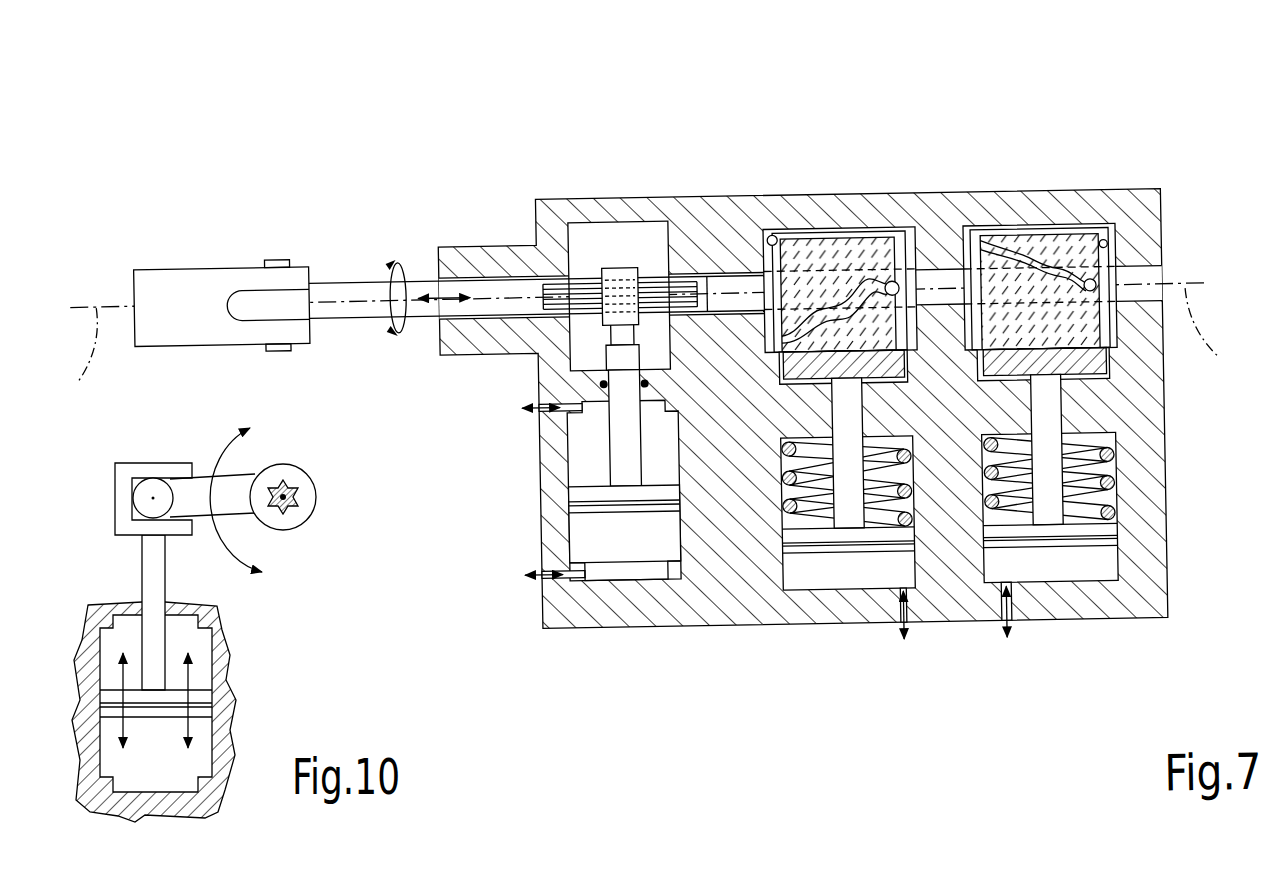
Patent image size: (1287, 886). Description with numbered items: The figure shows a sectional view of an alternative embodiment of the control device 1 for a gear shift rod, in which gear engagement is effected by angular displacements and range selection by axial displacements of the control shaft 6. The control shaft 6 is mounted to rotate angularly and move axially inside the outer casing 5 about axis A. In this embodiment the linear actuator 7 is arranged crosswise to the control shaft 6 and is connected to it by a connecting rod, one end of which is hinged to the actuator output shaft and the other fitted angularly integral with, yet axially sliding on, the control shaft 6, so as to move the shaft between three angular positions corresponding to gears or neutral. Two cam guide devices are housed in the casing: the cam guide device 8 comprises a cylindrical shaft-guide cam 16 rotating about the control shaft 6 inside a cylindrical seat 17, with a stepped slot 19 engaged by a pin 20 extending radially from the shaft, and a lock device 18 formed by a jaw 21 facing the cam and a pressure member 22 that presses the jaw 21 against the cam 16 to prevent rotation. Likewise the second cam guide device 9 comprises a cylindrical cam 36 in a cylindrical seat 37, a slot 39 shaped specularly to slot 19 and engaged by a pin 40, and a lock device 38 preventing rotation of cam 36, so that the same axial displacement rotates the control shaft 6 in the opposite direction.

In FIG. 7, the control device 1 is at (653, 360).
In FIG. 7, the outer casing 5 is at (555, 208).
In FIG. 7, the control shaft 6 is at (361, 305).
In FIG. 10, the control shaft 6 is at (290, 503).
In FIG. 7, the linear actuator 7 is at (531, 488).
In FIG. 10, the linear actuator 7 is at (243, 691).
In FIG. 7, the cam guide device 8 is at (861, 409).
In FIG. 7, the second cam guide device 9 is at (1107, 396).
In FIG. 7, the cylindrical shaft-guide cam 16 is at (910, 234).
In FIG. 7, the cylindrical seat 17 is at (776, 234).
In FIG. 7, the lock device 18 is at (851, 594).
In FIG. 7, the S-shaped slot 19 is at (865, 312).
In FIG. 7, the pin 20 is at (895, 282).
In FIG. 7, the jaw 21 is at (1214, 428).
In FIG. 7, the pressure member 22 is at (820, 548).
In FIG. 7, the cylindrical shaft-guide cam 36 is at (1109, 238).
In FIG. 7, the cylindrical seat 37 is at (1110, 252).
In FIG. 7, the lock device 38 is at (1095, 605).
In FIG. 7, the slot 39 is at (1013, 252).
In FIG. 7, the pin 40 is at (1097, 286).